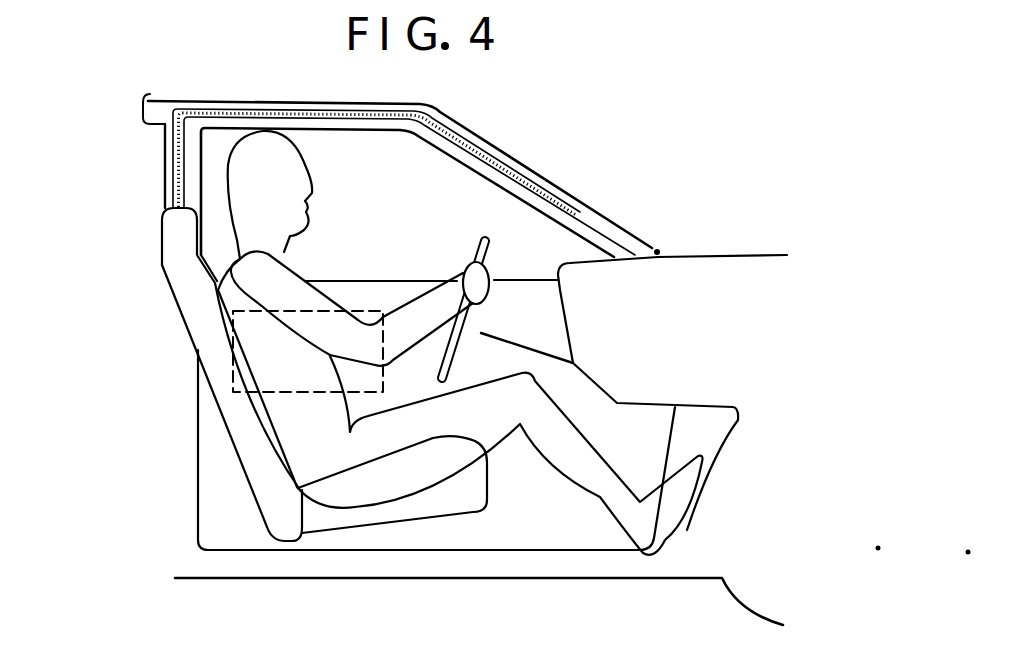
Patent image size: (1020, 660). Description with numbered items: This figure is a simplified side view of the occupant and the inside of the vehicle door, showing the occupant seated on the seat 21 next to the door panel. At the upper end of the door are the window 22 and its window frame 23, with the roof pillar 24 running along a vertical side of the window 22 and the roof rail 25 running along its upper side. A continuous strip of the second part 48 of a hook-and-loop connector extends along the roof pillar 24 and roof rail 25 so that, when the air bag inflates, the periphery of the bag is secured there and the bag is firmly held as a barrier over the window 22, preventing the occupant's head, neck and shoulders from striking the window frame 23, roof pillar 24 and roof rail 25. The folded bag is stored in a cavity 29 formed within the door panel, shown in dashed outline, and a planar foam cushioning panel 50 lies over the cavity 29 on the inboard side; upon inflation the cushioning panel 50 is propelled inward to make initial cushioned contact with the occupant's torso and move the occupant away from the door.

The seat 21 is at (193, 310).
The window 22 is at (477, 200).
The window frame 23 is at (365, 125).
The roof pillar 24 is at (166, 150).
The roof rail 25 is at (338, 99).
The cavity 29 is at (300, 376).
The second part of the connectors 48 is at (245, 107).
The cushioning panel 50 is at (403, 297).